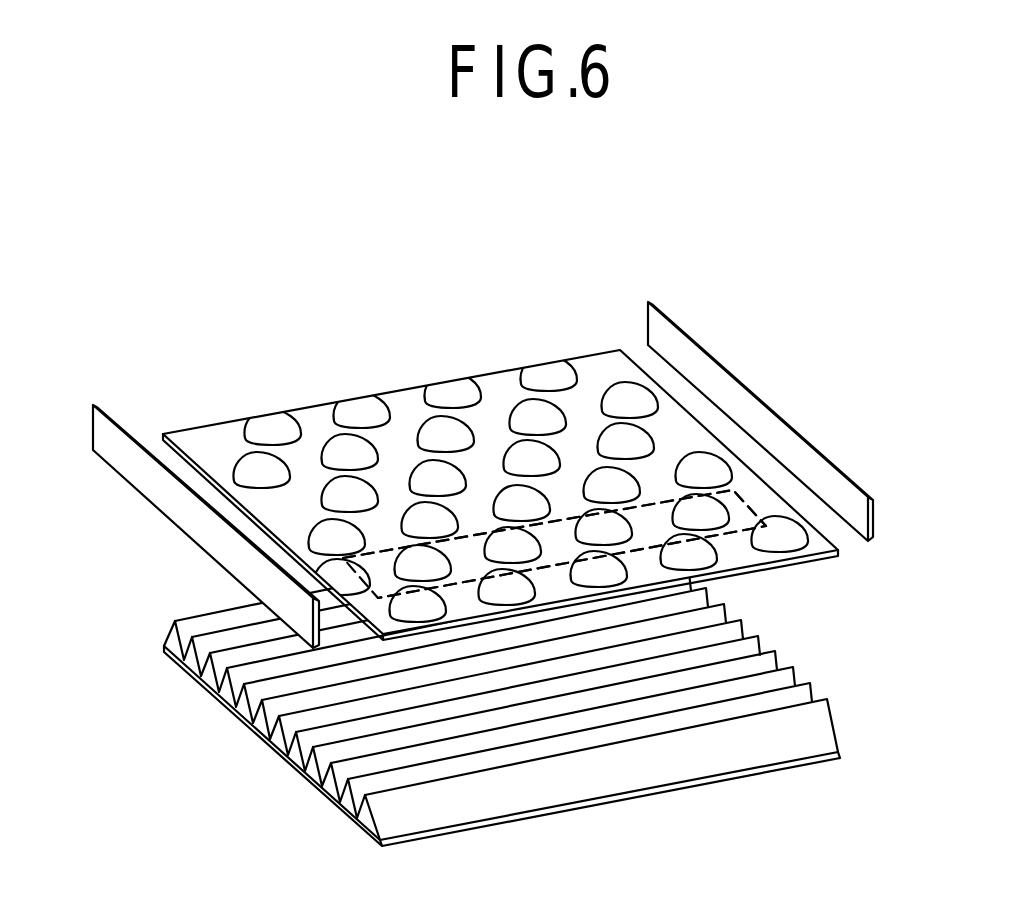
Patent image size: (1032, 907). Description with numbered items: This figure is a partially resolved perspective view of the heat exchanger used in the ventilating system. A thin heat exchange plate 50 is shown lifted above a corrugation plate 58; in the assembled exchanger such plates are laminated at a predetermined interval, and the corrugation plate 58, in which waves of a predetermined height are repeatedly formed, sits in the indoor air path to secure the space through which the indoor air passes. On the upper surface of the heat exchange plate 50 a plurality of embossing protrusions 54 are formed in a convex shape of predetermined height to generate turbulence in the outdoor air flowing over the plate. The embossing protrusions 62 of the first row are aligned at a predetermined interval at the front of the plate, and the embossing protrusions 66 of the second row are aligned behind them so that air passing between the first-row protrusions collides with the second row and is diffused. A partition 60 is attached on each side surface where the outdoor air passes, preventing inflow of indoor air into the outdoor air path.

The heat exchange plate 50 is at (413, 403).
The embossing protrusions 54 is at (273, 422).
The corrugation plate 58 is at (405, 808).
The partition 60 is at (157, 489).
The embossing protrusions of a first row 62 is at (378, 598).
The embossing protrusions of a second row 66 is at (343, 558).